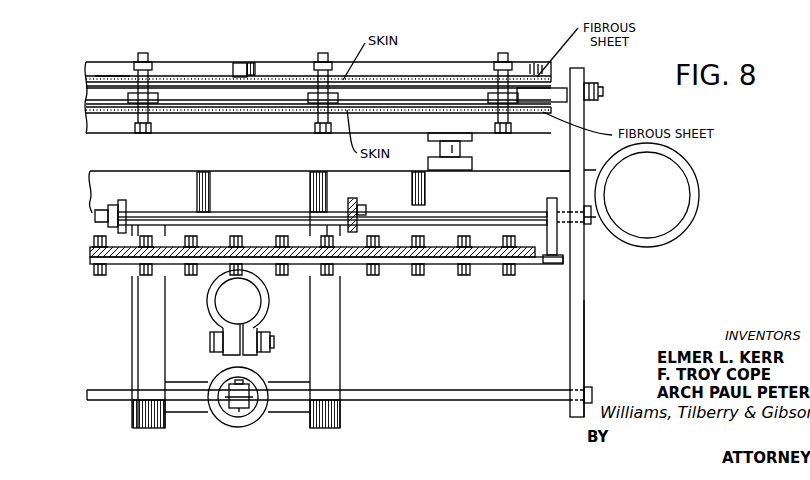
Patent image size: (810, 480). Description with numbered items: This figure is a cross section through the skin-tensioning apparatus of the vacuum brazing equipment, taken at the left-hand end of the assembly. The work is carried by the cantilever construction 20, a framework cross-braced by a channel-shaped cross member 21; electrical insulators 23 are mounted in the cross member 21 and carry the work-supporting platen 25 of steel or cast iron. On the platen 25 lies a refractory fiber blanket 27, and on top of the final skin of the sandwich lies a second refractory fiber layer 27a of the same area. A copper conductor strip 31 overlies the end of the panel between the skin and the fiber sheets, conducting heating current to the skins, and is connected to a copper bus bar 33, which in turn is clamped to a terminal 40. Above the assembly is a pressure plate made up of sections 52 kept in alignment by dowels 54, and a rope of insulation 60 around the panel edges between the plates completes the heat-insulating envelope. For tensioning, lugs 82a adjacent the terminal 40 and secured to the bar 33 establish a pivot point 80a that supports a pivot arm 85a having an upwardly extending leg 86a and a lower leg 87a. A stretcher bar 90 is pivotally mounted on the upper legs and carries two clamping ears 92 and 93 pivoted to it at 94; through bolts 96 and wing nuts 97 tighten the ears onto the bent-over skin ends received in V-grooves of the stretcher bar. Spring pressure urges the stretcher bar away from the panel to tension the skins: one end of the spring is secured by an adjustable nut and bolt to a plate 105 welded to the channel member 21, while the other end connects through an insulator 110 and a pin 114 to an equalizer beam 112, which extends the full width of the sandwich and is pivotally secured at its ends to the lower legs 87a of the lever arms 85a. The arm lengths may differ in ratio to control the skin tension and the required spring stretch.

The cantilever construction 20 is at (699, 236).
The channel-shaped cross member 21 is at (142, 173).
The electrical insulator 23 is at (463, 165).
The work-supporting platen 25 is at (422, 128).
The refractory fiber blanket 27 is at (182, 117).
The second refractory fiber layer 27a is at (113, 75).
The conductor strip 31 is at (123, 256).
The copper bus bar 33 is at (441, 264).
The terminal 40 is at (250, 303).
The pressure plate section 52 is at (193, 65).
The dowel 54 is at (240, 64).
The insulation rope 60 is at (548, 105).
The pivot point 80a is at (332, 213).
The lug 82a is at (123, 208).
The pivot arm 85a is at (595, 299).
The upwardly extending leg 86a is at (571, 155).
The lower leg 87a is at (580, 342).
The stretcher bar 90 is at (275, 92).
The clamping ear 92 is at (153, 70).
The clamping ear 93 is at (317, 103).
The pivot 94 is at (160, 103).
The through bolt 96 is at (323, 133).
The wing nut 97 is at (143, 53).
The plate 105 is at (187, 413).
The insulator 110 is at (243, 426).
The equalizer beam 112 is at (467, 396).
The pin 114 is at (237, 408).